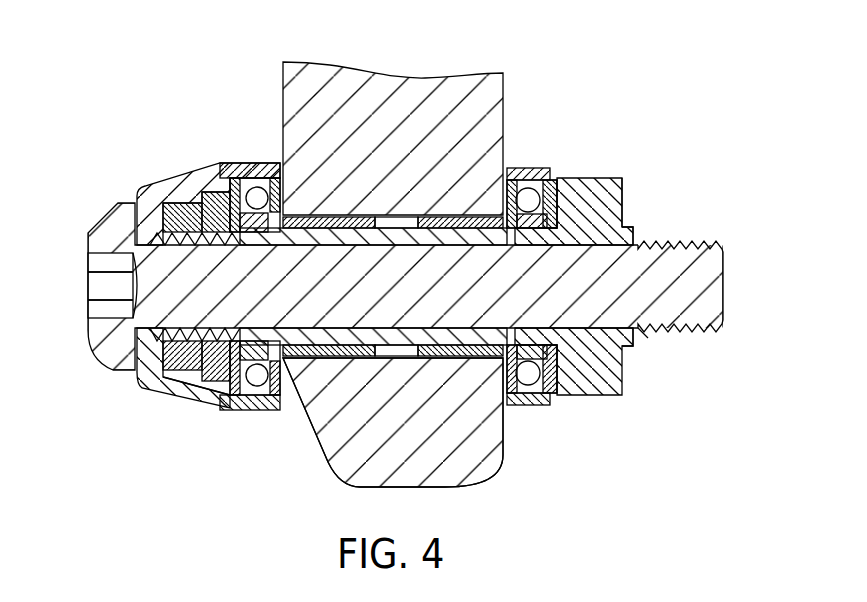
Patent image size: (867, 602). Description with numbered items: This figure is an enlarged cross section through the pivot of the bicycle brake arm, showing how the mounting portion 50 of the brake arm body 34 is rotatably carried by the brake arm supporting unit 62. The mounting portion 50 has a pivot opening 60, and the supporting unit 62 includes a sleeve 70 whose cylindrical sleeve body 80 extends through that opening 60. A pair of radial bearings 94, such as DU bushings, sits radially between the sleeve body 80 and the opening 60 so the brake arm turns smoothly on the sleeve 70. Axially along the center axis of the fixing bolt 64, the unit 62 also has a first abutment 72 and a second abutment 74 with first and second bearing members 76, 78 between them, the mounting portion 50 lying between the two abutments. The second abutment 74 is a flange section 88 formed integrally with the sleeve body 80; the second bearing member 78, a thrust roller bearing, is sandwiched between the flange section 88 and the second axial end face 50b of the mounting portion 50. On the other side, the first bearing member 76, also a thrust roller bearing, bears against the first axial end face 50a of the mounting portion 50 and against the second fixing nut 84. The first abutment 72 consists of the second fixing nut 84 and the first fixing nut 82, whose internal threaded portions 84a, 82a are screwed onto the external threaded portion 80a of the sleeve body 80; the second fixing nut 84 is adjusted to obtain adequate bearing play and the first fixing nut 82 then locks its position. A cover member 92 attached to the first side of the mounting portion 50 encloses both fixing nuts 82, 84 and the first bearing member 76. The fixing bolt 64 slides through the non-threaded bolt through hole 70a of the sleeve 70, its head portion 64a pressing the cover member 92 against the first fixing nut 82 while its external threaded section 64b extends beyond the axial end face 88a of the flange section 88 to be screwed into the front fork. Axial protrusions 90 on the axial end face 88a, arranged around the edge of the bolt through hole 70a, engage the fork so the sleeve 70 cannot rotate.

The brake arm body 34 is at (484, 50).
The mounting portion 50 is at (438, 445).
The first axial end face 50a is at (262, 180).
The second axial end face 50b is at (527, 168).
The pivot opening 60 is at (318, 378).
The brake arm supporting unit 62 is at (603, 408).
The fixing bolt 64 is at (706, 290).
The head portion 64a is at (117, 232).
The external threaded section 64b is at (690, 232).
The sleeve 70 is at (591, 151).
The bolt through hole 70a is at (660, 338).
The first abutment 72 is at (183, 296).
The second abutment 74 is at (577, 423).
The first bearing member 76 is at (263, 395).
The second bearing member 78 is at (521, 413).
The sleeve body 80 is at (403, 232).
The external threaded portion 80a is at (176, 386).
The first fixing nut 82 is at (190, 368).
The internal threaded portion 82a is at (137, 306).
The second fixing nut 84 is at (215, 378).
The internal threaded portion 84a is at (133, 283).
The flange section 88 is at (583, 195).
The axial end face 88a is at (623, 188).
The axial protrusions 90 is at (633, 242).
The cover member 92 is at (147, 194).
The radial bearings 94 is at (348, 352).